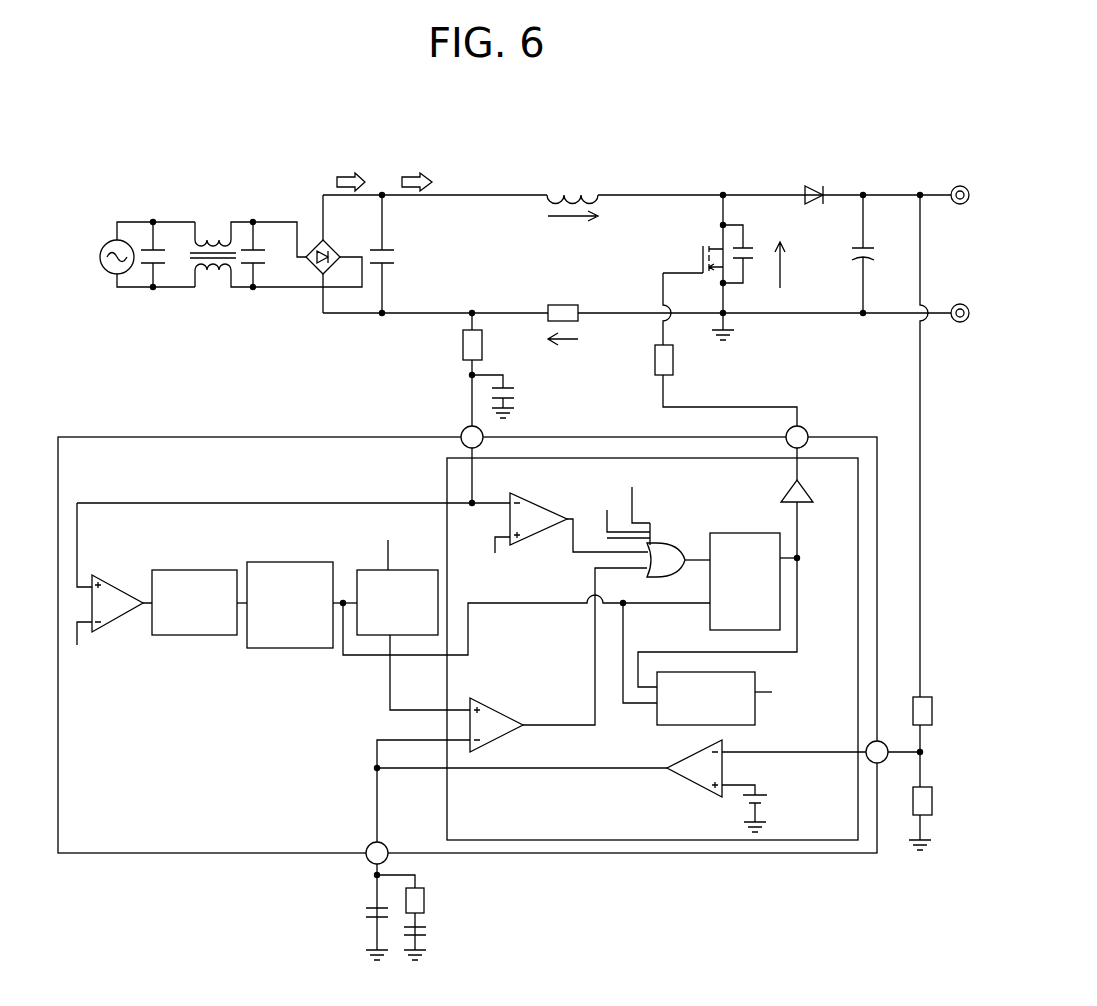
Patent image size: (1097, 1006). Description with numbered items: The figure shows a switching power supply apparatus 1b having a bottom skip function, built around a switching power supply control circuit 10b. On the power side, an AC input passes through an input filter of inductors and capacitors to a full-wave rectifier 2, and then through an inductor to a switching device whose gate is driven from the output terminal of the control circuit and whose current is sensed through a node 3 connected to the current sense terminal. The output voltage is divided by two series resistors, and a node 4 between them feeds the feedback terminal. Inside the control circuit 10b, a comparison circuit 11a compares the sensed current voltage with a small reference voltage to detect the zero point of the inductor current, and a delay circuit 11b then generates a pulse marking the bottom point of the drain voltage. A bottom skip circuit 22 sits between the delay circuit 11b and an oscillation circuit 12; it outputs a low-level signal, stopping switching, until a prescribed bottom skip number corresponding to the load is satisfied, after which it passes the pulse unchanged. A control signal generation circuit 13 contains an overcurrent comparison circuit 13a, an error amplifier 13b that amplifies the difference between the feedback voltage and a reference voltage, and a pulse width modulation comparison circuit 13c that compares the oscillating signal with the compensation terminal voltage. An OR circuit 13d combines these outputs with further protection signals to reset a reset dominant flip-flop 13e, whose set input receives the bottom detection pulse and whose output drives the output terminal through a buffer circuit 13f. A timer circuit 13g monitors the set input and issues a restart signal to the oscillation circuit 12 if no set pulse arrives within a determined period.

The switching power supply apparatus 1b is at (935, 111).
The full-wave rectifier 2 is at (330, 252).
The node 3 is at (469, 375).
The node 4 is at (926, 752).
The switching power supply control circuit 10b is at (222, 437).
The comparison circuit 11a is at (113, 586).
The delay circuit 11b is at (216, 570).
The oscillation circuit 12 is at (362, 570).
The control signal generation circuit 13 is at (591, 840).
The comparison circuit 13a is at (530, 493).
The error amplifier 13b is at (698, 750).
The comparison circuit 13c is at (501, 712).
The OR circuit 13d is at (672, 540).
The flip-flop 13e is at (744, 533).
The buffer circuit 13f is at (802, 502).
The timer circuit 13g is at (757, 715).
The bottom skip circuit 22 is at (297, 562).